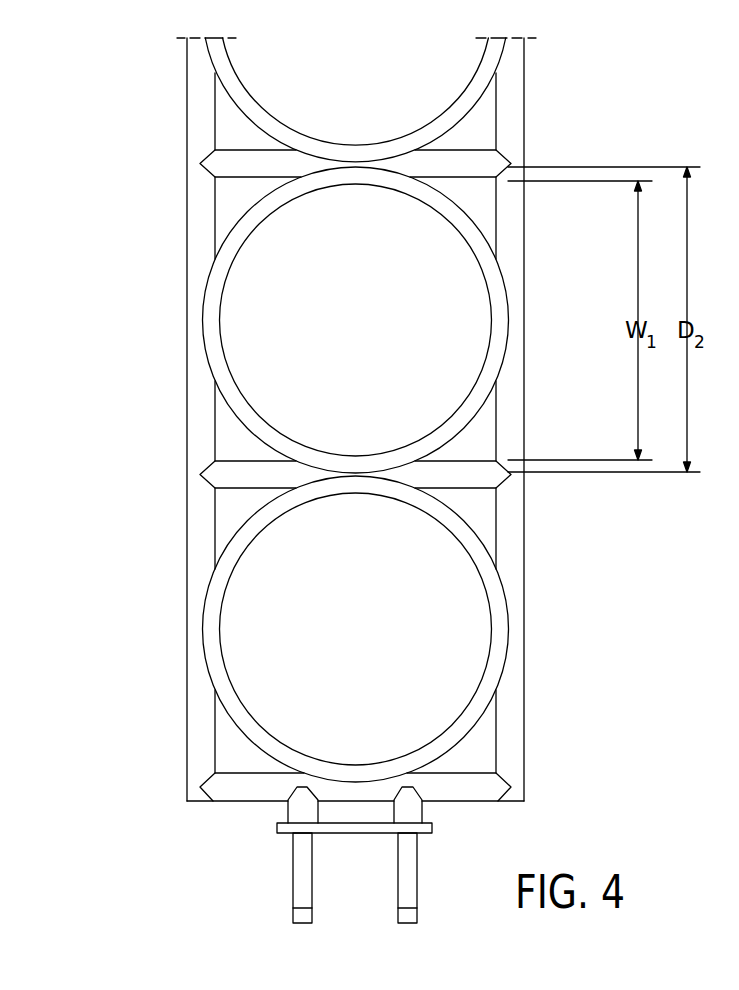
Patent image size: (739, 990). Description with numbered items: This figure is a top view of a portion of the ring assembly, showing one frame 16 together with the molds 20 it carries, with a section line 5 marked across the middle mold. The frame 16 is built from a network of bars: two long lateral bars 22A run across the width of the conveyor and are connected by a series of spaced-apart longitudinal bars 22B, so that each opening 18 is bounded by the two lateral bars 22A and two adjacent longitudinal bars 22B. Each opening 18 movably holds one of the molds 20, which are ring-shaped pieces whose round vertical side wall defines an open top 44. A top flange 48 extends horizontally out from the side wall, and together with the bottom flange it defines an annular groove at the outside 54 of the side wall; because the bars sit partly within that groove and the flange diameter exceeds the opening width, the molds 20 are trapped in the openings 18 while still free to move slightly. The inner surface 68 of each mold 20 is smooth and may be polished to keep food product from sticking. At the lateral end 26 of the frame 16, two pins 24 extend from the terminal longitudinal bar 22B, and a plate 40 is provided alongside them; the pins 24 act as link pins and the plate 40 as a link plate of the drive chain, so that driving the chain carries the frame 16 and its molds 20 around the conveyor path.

The frame 16 is at (67, 380).
The opening 18 is at (228, 198).
The mold 20 is at (244, 93).
The lateral bar 22A is at (196, 563).
The longitudinal bar 22B is at (488, 152).
The pin 24 is at (312, 863).
The lateral end 26 is at (434, 906).
The plate 40 is at (281, 829).
The open top 44 is at (246, 642).
The top flange 48 is at (216, 362).
The outside of the side wall 54 is at (479, 421).
The inner surface 68 is at (346, 510).
The section line 5- 5 is at (160, 320).